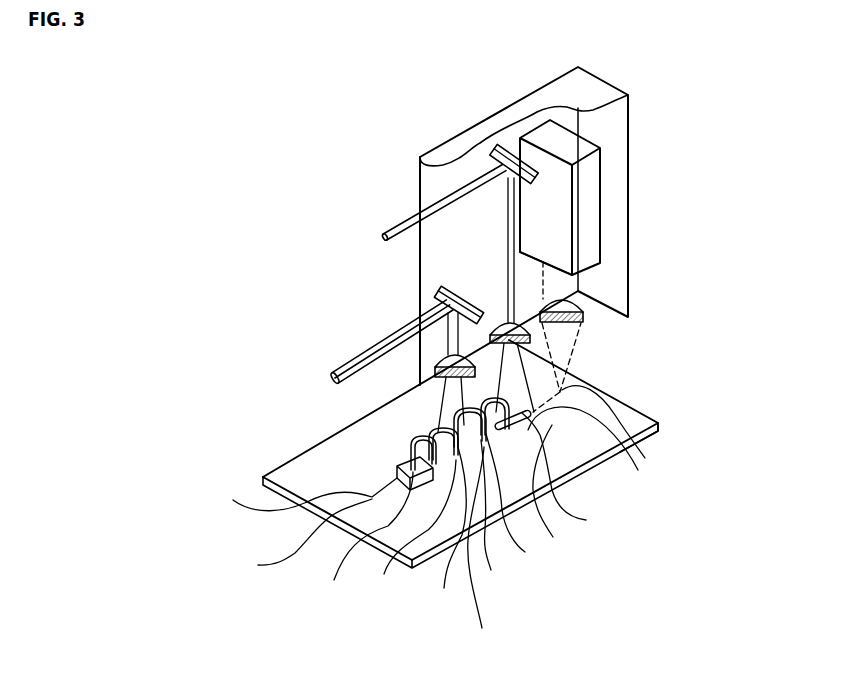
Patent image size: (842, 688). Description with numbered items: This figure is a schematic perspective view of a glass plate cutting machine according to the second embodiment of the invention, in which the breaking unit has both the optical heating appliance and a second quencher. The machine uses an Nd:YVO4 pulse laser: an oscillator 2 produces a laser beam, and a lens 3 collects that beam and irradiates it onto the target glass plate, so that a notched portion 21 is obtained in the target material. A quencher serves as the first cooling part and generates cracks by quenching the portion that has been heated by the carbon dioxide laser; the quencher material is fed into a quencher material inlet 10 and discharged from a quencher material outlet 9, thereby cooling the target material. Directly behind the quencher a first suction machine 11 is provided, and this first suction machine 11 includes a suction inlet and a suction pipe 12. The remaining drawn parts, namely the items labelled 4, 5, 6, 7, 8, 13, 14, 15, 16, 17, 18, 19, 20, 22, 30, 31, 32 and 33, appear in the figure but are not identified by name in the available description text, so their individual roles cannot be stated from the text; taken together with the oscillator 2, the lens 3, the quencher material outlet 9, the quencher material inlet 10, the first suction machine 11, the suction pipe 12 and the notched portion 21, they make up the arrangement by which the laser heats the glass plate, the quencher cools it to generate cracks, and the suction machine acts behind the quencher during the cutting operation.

The oscillator 2 is at (578, 221).
The lens 3 is at (582, 305).
The light emitting element 4 is at (575, 287).
The light guide rod 5 is at (450, 203).
The mirror 6 is at (498, 152).
The lens 7 is at (532, 337).
The optical fiber 8 is at (591, 436).
The quencher material outlet 9 is at (513, 502).
The quencher material inlet 10 is at (555, 474).
The first suction machine 11 is at (495, 522).
The suction pipe 12 is at (513, 457).
The light guide rod end 13 is at (334, 377).
The mirror 14 is at (436, 296).
The light guide rod 15 is at (397, 330).
The optical fiber 16 is at (405, 532).
The optical fiber 17 is at (452, 530).
The support panel 18 is at (612, 132).
The base plate edge 19 is at (650, 437).
The base plate 20 is at (323, 483).
The notched portion 21 is at (302, 542).
The cable 22 is at (298, 497).
The fiber clip 30 is at (480, 535).
The fiber clip 31 is at (388, 520).
The fiber clip 32 is at (412, 430).
The fiber clip block 33 is at (398, 470).